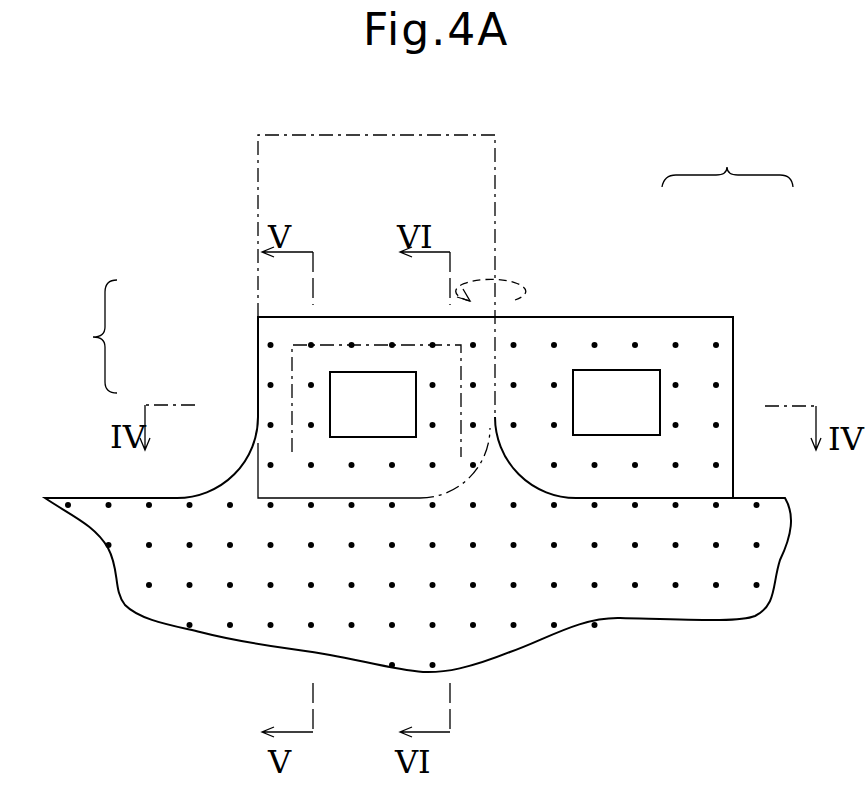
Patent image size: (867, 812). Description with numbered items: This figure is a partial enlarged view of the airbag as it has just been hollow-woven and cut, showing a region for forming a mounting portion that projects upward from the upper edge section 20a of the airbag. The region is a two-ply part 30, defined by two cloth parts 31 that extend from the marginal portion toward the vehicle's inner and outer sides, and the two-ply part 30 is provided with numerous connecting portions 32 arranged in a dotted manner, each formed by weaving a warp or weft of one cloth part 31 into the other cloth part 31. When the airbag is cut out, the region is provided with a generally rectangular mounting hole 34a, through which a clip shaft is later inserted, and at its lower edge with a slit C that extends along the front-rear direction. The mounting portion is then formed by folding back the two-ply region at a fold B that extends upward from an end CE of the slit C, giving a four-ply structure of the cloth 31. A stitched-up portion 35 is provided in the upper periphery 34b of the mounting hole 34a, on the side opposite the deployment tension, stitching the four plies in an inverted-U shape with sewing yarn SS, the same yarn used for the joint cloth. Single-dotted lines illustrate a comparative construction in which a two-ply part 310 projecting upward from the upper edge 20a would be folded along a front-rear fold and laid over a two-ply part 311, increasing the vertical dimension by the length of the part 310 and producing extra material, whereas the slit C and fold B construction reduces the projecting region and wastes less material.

The upper edge section 20a is at (90, 510).
The two-ply part 30 is at (422, 266).
The cloth part 31 is at (270, 370).
The connecting portion 32 is at (295, 591).
The mounting hole 34a is at (378, 393).
The upper periphery of the mounting hole 34b is at (300, 357).
The stitched-up portion 35 is at (256, 331).
The two-ply part 310 is at (430, 142).
The two-ply part 311 is at (459, 330).
The sewing yarn SS is at (342, 345).
The fold B is at (495, 346).
The end of the slit CE is at (513, 395).
The slit C is at (655, 498).